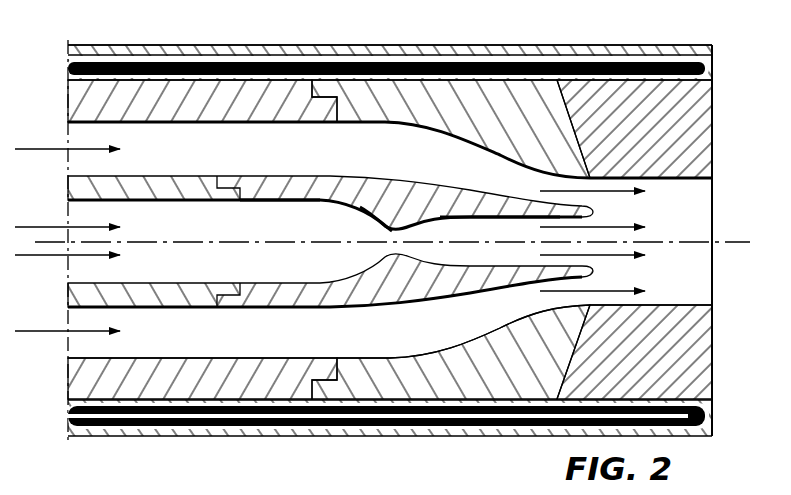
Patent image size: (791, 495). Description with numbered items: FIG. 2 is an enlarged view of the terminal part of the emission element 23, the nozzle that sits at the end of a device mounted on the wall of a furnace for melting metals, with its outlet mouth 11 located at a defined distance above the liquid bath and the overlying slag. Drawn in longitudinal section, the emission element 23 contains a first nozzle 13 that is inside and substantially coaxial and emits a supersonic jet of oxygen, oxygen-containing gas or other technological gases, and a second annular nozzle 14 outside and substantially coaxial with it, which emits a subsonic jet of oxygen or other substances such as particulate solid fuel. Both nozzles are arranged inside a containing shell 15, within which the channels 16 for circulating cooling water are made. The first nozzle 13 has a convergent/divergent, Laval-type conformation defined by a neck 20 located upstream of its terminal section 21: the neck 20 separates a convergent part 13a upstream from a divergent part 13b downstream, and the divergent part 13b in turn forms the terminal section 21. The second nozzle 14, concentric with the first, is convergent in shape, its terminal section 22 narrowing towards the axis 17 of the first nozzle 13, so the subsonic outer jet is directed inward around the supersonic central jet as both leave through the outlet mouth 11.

The outlet mouth 11 is at (676, 228).
The first nozzle 13 is at (348, 190).
The convergent part 13a is at (291, 224).
The divergent part 13b is at (482, 236).
The second annular nozzle 14 is at (510, 96).
The containing shell 15 is at (384, 46).
The channels 16 is at (200, 48).
The axis 17 is at (209, 242).
The neck 20 is at (397, 222).
The terminal section 21 is at (606, 218).
The terminal section 22 is at (574, 298).
The emission element 23 is at (434, 38).